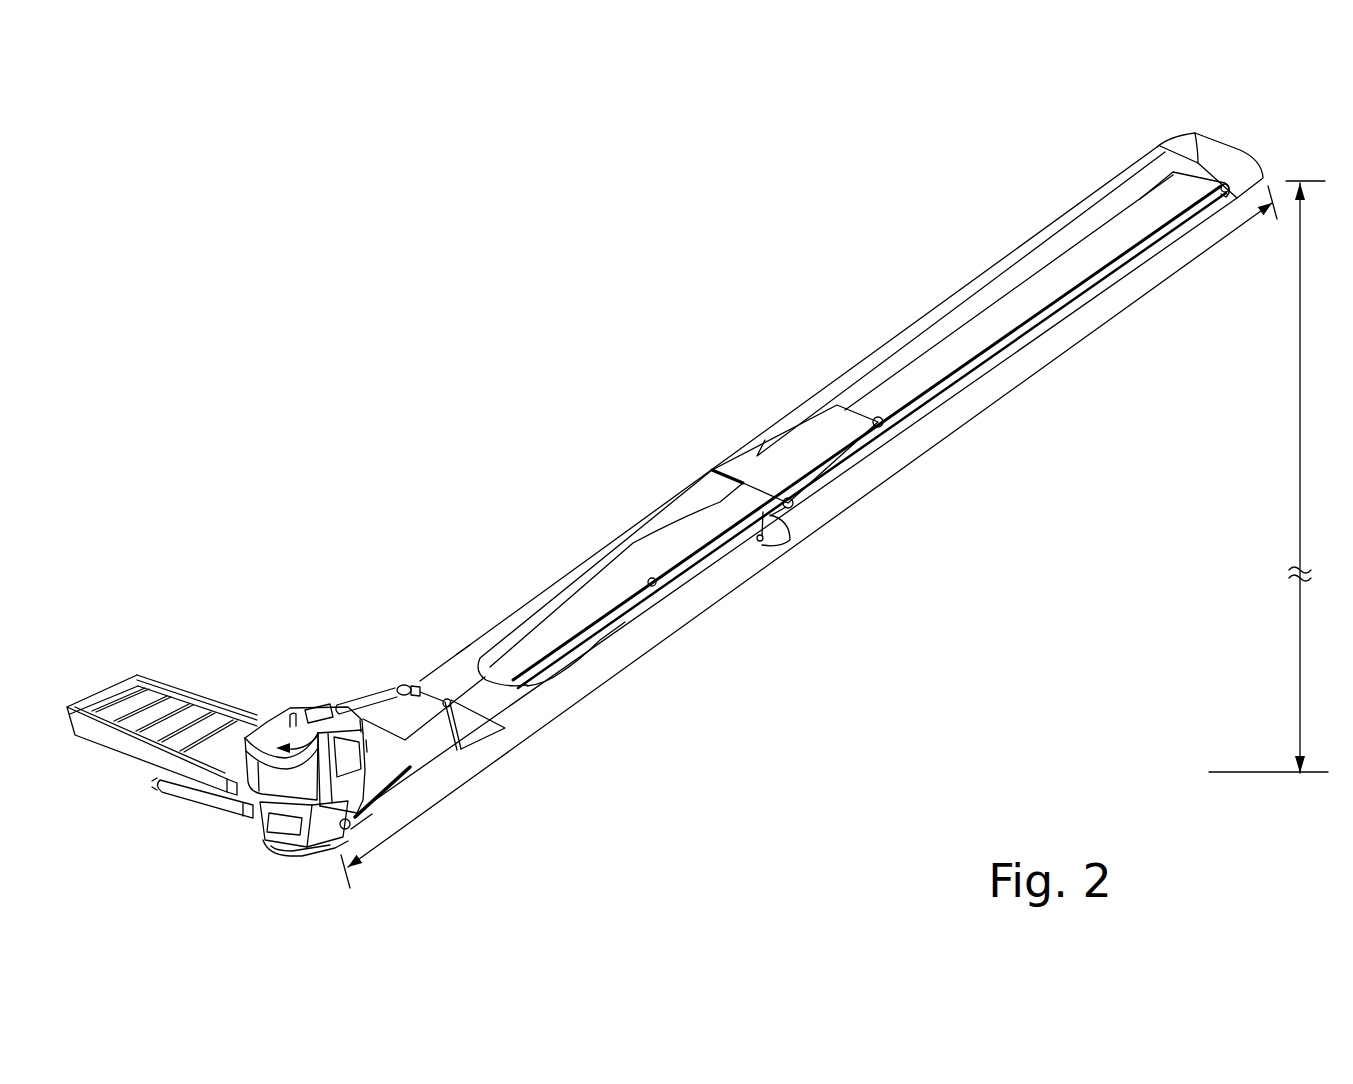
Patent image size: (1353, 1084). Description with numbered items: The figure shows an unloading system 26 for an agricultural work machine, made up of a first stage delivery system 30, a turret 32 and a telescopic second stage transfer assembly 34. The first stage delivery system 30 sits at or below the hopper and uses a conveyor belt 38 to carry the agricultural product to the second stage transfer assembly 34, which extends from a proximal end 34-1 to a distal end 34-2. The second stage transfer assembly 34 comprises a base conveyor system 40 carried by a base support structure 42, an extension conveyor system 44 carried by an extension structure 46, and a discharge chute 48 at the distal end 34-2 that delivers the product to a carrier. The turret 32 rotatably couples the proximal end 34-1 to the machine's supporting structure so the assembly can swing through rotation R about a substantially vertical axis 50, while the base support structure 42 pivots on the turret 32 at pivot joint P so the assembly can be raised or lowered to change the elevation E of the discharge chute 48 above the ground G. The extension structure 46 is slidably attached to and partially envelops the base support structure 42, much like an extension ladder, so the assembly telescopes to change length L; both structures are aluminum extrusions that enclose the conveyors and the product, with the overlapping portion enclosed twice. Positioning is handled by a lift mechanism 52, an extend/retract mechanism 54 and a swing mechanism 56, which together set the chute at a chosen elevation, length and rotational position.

The unloading system 26 is at (360, 333).
The first stage delivery system 30 is at (290, 708).
The turret 32 is at (267, 843).
The telescopic second stage transfer assembly 34 is at (842, 338).
The proximal end 34-1 is at (390, 660).
The distal end 34-2 is at (1135, 119).
The conveyor belt 38 is at (117, 686).
The base conveyor system 40 is at (633, 545).
The base support structure 42 is at (458, 650).
The extension conveyor system 44 is at (1000, 299).
The extension structure 46 is at (1053, 217).
The discharge chute 48 is at (1258, 158).
The axis 50 is at (292, 690).
The lift mechanism 52 is at (399, 686).
The extend/retract mechanism 54 is at (857, 472).
The swing mechanism 56 is at (207, 808).